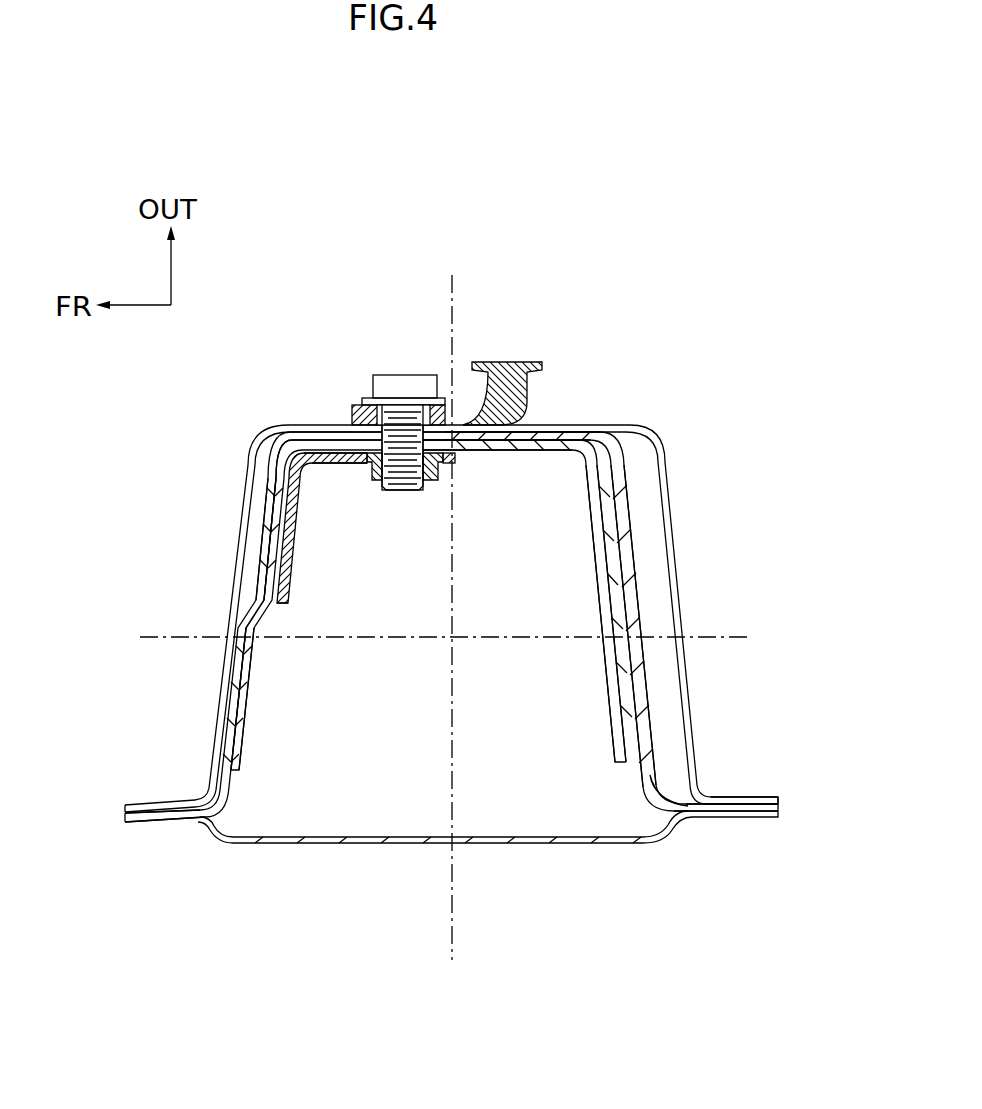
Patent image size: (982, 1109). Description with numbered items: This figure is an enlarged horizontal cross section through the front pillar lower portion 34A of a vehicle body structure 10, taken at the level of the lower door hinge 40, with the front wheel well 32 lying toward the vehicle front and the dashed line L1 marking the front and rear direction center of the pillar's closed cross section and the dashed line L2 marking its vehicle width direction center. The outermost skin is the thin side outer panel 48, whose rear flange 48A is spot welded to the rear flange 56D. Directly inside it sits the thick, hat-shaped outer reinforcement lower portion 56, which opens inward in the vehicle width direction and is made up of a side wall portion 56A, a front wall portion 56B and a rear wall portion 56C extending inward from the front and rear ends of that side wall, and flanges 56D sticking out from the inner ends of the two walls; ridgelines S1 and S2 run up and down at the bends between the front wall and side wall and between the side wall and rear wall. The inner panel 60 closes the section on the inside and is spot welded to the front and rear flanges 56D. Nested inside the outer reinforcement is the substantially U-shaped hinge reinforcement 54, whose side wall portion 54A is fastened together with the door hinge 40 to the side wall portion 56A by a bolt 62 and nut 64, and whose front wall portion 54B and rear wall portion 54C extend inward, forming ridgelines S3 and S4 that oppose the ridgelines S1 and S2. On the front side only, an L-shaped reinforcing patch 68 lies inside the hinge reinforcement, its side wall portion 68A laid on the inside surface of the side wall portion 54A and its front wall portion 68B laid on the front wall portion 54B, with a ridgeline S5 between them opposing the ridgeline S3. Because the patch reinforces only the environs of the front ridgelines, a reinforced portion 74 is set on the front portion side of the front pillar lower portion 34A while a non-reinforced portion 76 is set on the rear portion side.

The vehicle lower structure 10 is at (665, 318).
The front wheel well 32 is at (93, 470).
The front pillar lower portion 34A is at (690, 413).
The door hinge 40 is at (512, 360).
The side outer panel 48 is at (666, 495).
The flange 48A is at (738, 797).
The hinge reinforcement 54 is at (603, 563).
The side wall portion 54A is at (531, 452).
The front wall portion 54B is at (255, 684).
The rear wall portion 54C is at (618, 668).
The outer reinforcement lower portion 56 is at (635, 550).
The side wall portion 56A is at (559, 437).
The front wall portion 56B is at (266, 522).
The rear wall portion 56C is at (645, 673).
The flange 56D is at (150, 805).
The inner panel 60 is at (500, 845).
The bolt 62 is at (384, 373).
The nut 64 is at (440, 473).
The reinforcing patch 68 is at (301, 538).
The side wall portion 68A is at (344, 464).
The front wall portion 68B is at (293, 585).
The reinforced portion 74 is at (338, 384).
The non-reinforced portion 76 is at (595, 398).
The long dashed short dashed line L1 is at (455, 298).
The long dashed short dashed line L2 is at (745, 634).
The ridgeline S1 is at (273, 428).
The ridgeline S2 is at (606, 432).
The ridgeline S3 is at (307, 442).
The ridgeline S4 is at (581, 450).
The ridgeline S5 is at (307, 467).